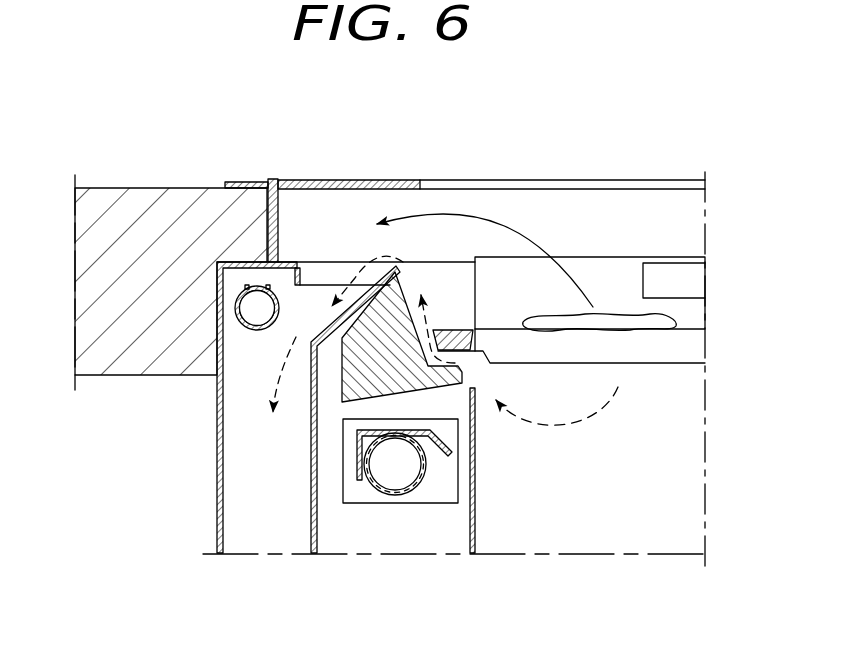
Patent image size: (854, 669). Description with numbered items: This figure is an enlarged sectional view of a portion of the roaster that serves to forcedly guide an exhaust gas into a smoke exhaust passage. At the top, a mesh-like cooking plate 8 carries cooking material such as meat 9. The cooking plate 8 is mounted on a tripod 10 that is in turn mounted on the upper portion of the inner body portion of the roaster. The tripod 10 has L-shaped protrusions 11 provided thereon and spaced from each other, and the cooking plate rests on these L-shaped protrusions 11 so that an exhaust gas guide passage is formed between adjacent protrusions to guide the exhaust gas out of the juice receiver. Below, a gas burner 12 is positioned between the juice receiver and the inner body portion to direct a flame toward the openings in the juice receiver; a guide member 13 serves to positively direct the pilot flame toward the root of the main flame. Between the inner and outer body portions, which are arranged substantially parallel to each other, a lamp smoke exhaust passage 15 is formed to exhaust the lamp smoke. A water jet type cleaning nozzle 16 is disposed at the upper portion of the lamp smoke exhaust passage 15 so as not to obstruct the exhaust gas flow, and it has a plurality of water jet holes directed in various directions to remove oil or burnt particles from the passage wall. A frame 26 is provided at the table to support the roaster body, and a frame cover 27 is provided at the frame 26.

The cooking plate 8 is at (655, 350).
The meat 9 is at (627, 325).
The tripod 10 is at (400, 302).
The L-shaped protrusions 11 is at (452, 350).
The gas burner 12 is at (412, 480).
The guide member 13 is at (452, 437).
The lamp smoke exhaust passage 15 is at (283, 527).
The water jet type cleaning nozzle 16 is at (257, 322).
The frame 26 is at (248, 182).
The frame cover 27 is at (368, 181).